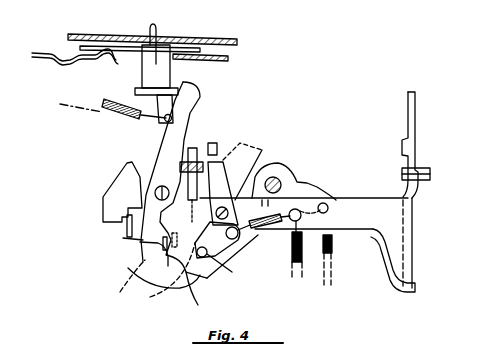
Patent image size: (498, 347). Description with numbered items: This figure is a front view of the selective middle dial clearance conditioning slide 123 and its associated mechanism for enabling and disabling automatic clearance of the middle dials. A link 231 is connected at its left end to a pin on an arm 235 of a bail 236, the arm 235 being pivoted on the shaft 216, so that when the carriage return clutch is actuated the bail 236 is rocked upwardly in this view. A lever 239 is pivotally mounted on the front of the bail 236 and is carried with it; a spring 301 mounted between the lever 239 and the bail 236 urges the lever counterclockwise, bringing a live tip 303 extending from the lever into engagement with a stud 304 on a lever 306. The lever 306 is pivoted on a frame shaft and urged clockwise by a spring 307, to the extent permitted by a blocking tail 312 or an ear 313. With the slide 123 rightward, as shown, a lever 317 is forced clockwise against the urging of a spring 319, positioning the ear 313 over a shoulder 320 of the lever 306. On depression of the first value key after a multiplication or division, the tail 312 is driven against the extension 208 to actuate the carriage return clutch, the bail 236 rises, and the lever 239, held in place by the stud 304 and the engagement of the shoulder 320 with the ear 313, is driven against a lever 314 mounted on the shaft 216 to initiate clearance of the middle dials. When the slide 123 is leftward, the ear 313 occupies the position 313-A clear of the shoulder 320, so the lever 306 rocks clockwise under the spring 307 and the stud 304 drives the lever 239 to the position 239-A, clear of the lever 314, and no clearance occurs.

The slide 123 is at (150, 33).
The spring 319 is at (113, 100).
The lever 317 is at (158, 140).
The extension 208 is at (108, 194).
The blocking tail 312 is at (126, 233).
The ear 313 is at (160, 244).
The shoulder 320 is at (150, 264).
The position of ear 313-A is at (152, 294).
The lever 314 is at (208, 148).
The lever 239 is at (227, 160).
The position of lever 239-A is at (262, 150).
The link 231 is at (408, 100).
The shaft 216 is at (402, 171).
The bail 236 is at (352, 190).
The arm 235 is at (414, 196).
The spring 301 is at (248, 236).
The stud 304 is at (222, 258).
The lever 306 is at (212, 277).
The live tip 303 is at (188, 288).
The spring 307 is at (334, 246).